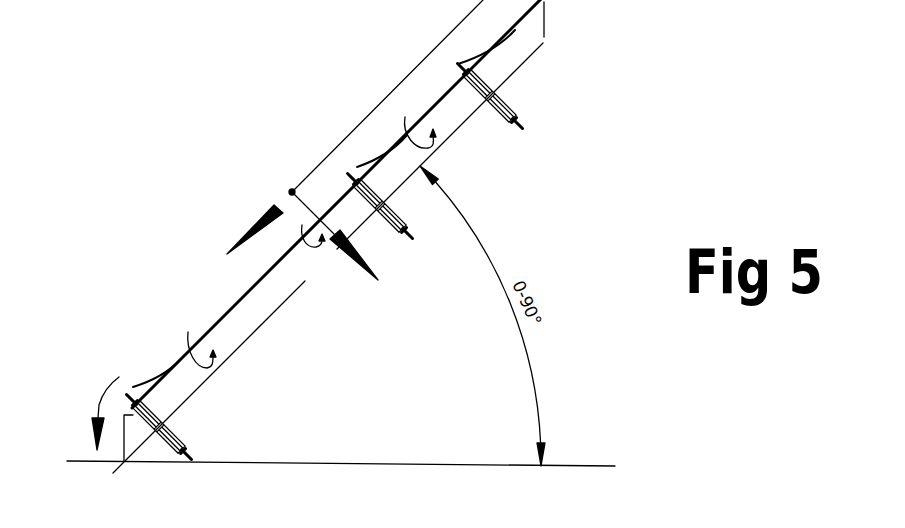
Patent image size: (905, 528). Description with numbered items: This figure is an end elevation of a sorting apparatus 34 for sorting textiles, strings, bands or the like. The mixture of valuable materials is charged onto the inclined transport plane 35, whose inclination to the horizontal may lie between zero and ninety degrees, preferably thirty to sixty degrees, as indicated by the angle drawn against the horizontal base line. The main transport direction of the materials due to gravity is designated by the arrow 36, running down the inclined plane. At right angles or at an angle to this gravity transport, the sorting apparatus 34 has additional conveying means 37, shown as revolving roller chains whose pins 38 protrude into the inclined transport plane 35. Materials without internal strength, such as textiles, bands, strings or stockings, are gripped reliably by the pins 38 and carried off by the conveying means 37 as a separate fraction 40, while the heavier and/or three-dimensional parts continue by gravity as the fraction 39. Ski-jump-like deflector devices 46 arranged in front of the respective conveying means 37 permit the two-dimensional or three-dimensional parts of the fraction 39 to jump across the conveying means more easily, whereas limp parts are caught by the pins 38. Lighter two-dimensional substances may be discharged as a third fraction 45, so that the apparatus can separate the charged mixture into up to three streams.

The sorting apparatus 34 is at (614, 104).
The inclined transport plane 35 is at (419, 111).
The main transport direction arrow 36 is at (381, 102).
The conveying means 37 is at (505, 98).
The pins 38 is at (344, 180).
The fraction 39 is at (100, 407).
The fraction 40 is at (363, 255).
The third fraction 45 is at (305, 250).
The ski-jump-like deflector devices 46 is at (467, 20).